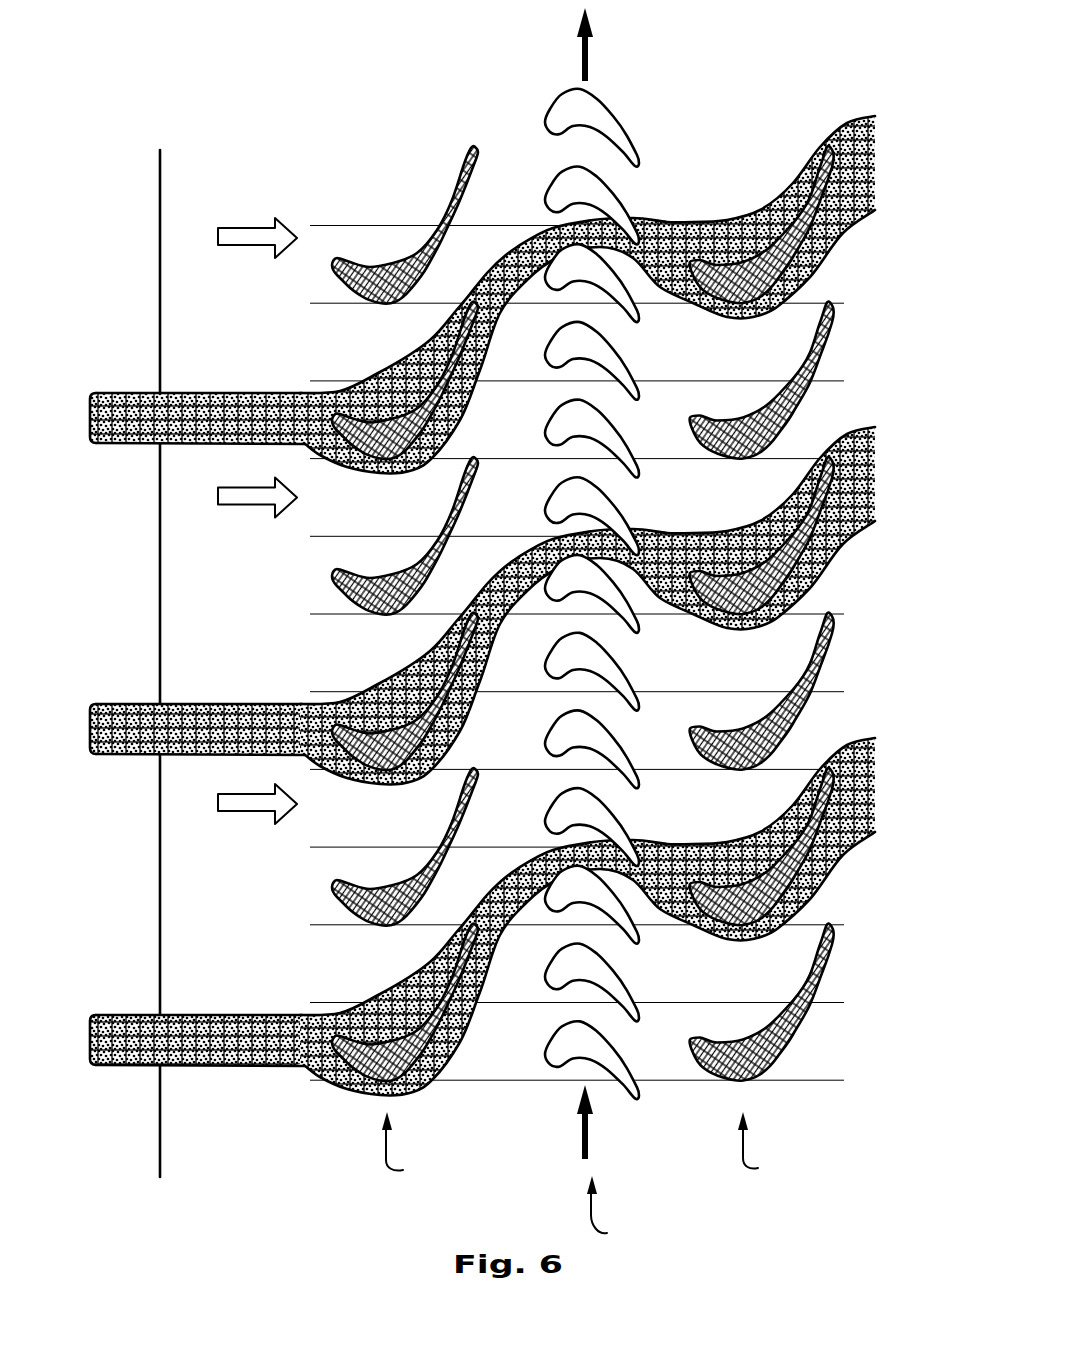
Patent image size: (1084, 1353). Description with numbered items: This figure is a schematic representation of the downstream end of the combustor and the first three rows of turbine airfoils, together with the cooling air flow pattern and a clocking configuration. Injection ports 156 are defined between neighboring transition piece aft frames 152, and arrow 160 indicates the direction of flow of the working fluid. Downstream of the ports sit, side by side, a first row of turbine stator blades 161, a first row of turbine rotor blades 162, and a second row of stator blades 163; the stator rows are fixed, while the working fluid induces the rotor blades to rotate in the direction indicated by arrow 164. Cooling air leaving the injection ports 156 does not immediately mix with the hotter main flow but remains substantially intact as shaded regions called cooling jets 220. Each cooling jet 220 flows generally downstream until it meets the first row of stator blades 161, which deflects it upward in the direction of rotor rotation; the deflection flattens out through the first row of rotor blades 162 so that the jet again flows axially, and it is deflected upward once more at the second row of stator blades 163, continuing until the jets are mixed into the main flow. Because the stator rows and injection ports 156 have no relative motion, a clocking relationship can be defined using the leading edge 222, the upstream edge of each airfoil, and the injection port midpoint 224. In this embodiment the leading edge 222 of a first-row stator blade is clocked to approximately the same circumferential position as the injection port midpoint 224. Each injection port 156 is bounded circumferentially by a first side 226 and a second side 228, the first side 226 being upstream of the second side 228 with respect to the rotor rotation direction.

The transition piece aft frame 152 is at (160, 210).
The injection port 156 is at (140, 417).
The arrow 160 is at (263, 238).
The first row of turbine stator blades 161 is at (412, 1148).
The first row of turbine rotor blades 162 is at (612, 1167).
The second row of stator blades 163 is at (768, 1147).
The arrow 164 is at (587, 58).
The cooling jet 220 is at (577, 243).
The leading edge 222 is at (327, 413).
The injection port midpoint 224 is at (157, 417).
The first side 226 is at (160, 444).
The second side 228 is at (160, 392).